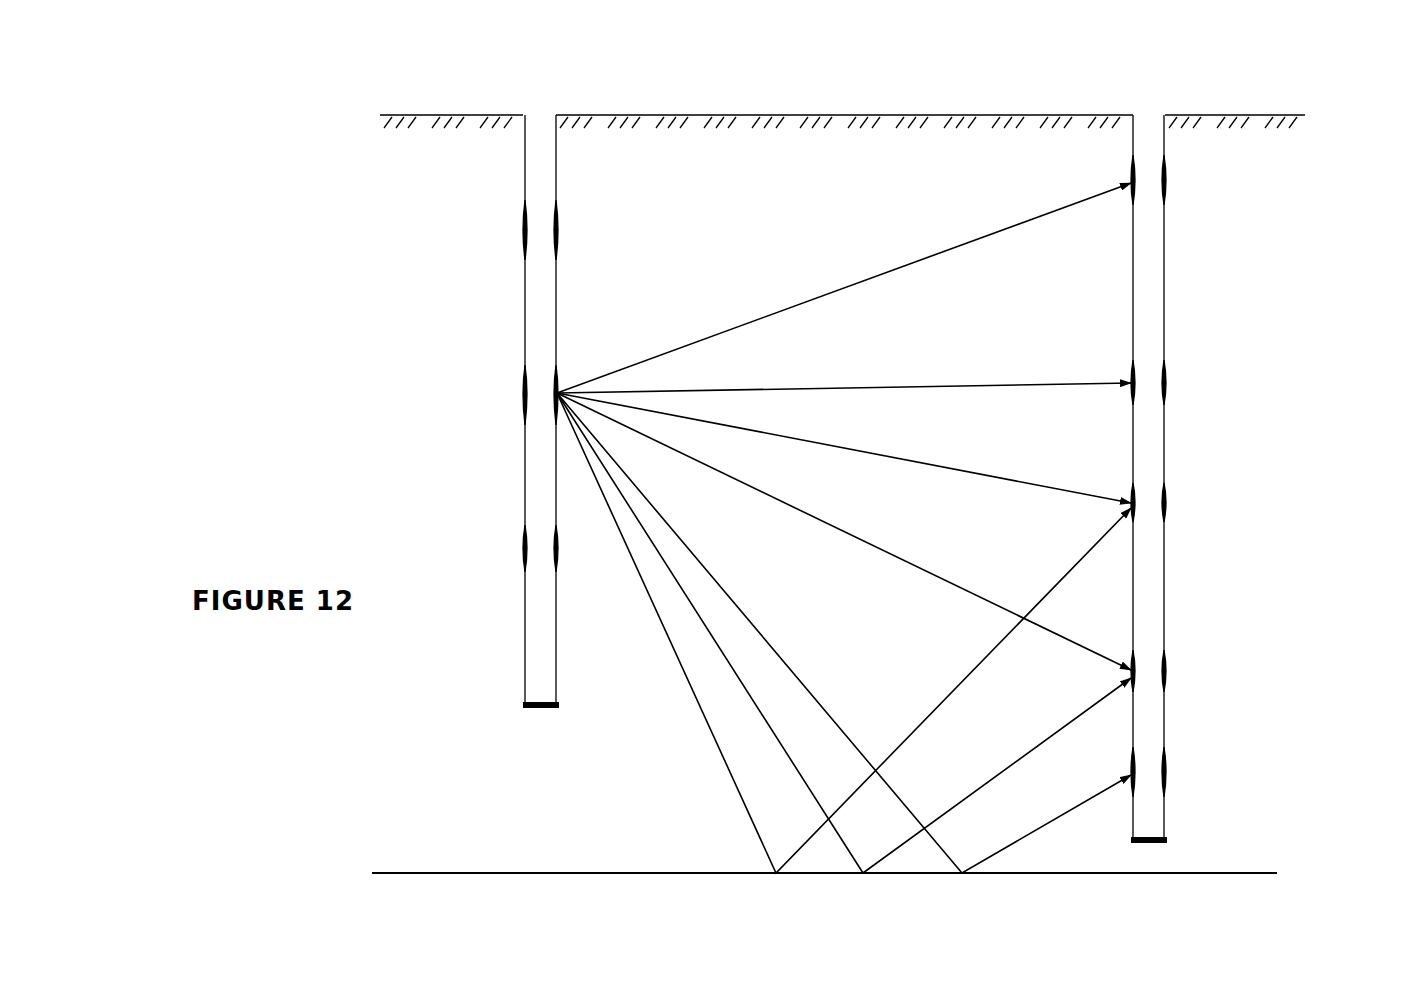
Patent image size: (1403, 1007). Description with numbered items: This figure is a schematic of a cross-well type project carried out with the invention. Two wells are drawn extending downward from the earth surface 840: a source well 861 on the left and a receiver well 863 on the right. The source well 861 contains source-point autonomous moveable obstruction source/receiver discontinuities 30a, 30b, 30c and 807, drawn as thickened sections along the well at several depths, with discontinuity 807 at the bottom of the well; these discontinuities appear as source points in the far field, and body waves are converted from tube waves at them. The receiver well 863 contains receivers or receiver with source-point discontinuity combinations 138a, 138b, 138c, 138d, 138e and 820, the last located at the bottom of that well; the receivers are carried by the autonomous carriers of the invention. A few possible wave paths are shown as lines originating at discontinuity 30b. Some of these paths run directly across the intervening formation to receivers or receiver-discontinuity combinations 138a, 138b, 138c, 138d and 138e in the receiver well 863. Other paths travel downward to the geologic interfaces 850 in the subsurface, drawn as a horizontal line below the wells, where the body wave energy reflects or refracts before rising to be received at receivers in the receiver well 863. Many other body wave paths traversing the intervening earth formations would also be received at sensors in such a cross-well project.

The earth surface 840 is at (375, 113).
The geologic interfaces 850 is at (370, 871).
The source well 861 is at (533, 101).
The receiver well 863 is at (1138, 102).
The source/receiver discontinuity 807 is at (510, 710).
The receiver with source-point discontinuity combination 820 is at (1181, 845).
The source/receiver discontinuity 30a is at (525, 228).
The source/receiver discontinuity 30b is at (525, 398).
The source/receiver discontinuity 30c is at (525, 560).
The receiver with source-point discontinuity combination 138a is at (1165, 183).
The receiver with source-point discontinuity combination 138b is at (1165, 390).
The receiver with source-point discontinuity combination 138c is at (1168, 512).
The receiver with source-point discontinuity combination 138d is at (1168, 683).
The receiver with source-point discontinuity combination 138e is at (1168, 775).